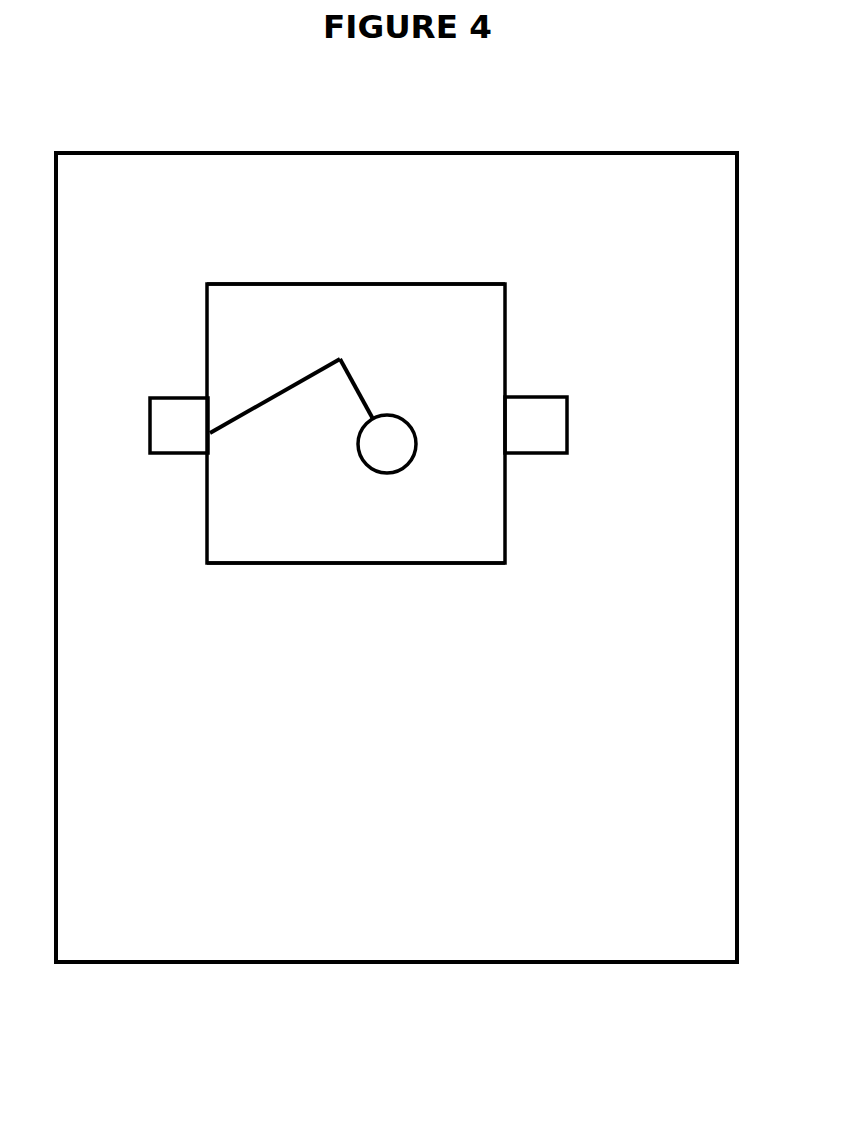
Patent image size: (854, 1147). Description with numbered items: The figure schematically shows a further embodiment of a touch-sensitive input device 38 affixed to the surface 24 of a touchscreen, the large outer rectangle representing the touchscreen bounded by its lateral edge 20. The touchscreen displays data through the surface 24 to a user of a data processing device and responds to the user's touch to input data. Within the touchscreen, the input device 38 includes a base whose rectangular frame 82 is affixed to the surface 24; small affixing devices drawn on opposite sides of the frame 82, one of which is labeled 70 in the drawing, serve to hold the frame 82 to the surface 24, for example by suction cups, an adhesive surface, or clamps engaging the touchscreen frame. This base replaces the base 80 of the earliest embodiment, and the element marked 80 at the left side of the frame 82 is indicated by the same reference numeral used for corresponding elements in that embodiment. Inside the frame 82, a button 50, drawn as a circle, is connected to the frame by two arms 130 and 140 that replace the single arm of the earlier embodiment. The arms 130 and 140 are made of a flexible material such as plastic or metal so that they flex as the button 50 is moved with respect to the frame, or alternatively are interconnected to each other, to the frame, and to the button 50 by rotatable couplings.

The lateral edge of a touchscreen 20 is at (145, 962).
The surface 24 is at (396, 557).
The touch-sensitive input device 38 is at (377, 605).
The rectangular frame 82 is at (303, 565).
The base 80 is at (160, 455).
The right tab 70 is at (542, 397).
The arm 130 is at (275, 395).
The arm 140 is at (357, 390).
The button 50 is at (371, 468).